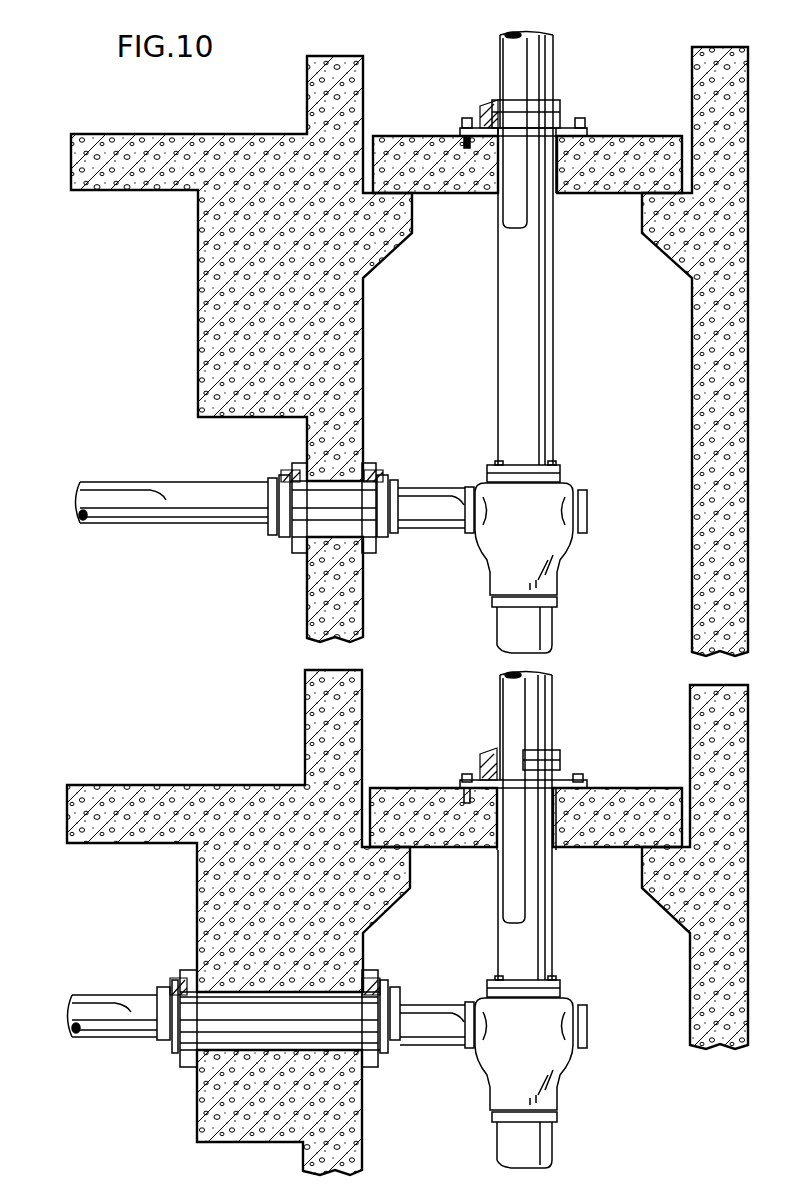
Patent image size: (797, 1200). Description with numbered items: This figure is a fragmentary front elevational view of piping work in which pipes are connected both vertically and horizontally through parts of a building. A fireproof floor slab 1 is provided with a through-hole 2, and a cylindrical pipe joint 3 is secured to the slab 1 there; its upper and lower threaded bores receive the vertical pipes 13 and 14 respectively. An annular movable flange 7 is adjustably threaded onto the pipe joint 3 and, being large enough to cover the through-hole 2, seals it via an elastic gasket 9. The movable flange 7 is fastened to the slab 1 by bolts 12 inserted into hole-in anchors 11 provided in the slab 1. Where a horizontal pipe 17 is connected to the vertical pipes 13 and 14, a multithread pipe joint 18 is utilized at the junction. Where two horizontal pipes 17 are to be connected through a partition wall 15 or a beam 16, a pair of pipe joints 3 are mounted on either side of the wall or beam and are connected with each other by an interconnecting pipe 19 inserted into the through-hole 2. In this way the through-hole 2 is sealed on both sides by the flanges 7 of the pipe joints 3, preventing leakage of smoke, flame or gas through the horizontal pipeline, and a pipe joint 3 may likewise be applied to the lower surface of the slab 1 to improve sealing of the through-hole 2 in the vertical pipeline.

The fireproof floor slab 1 is at (605, 195).
The through-hole 2 is at (497, 180).
The pipe joint 3 is at (547, 102).
The movable flange 7 is at (488, 117).
The elastic gasket 9 is at (482, 153).
The hole-in anchor 11 is at (465, 147).
The bolt 12 is at (467, 127).
The pipe 13 is at (537, 53).
The pipe 14 is at (537, 350).
The partition wall 15 is at (307, 628).
The beam 16 is at (197, 920).
The horizontal pipe 17 is at (442, 520).
The multithread pipe joint 18 is at (552, 557).
The interconnecting pipe 19 is at (322, 488).